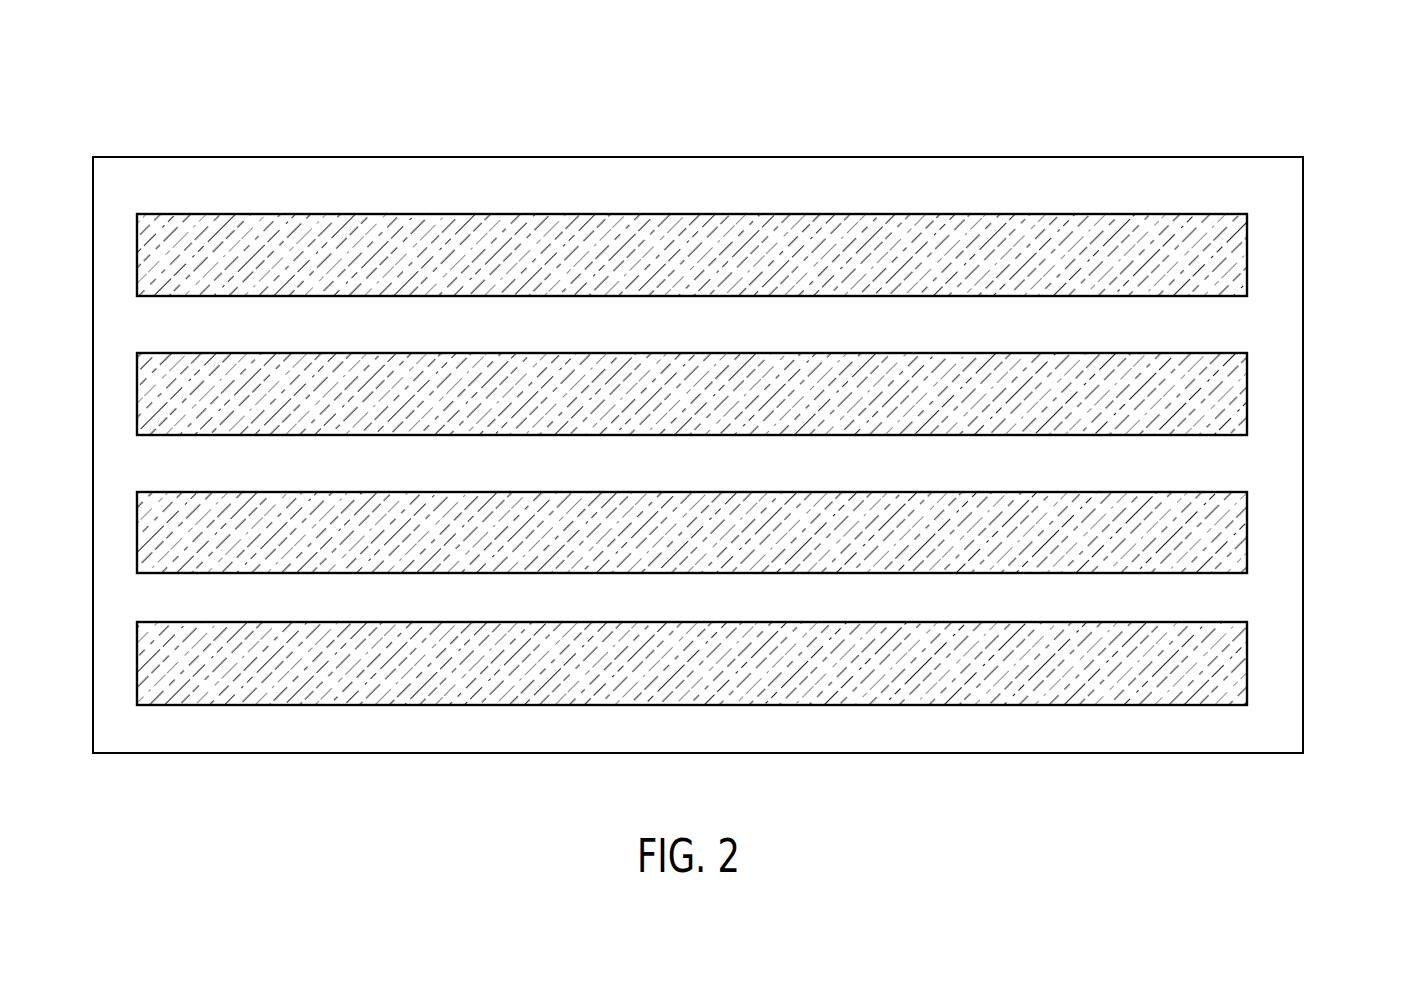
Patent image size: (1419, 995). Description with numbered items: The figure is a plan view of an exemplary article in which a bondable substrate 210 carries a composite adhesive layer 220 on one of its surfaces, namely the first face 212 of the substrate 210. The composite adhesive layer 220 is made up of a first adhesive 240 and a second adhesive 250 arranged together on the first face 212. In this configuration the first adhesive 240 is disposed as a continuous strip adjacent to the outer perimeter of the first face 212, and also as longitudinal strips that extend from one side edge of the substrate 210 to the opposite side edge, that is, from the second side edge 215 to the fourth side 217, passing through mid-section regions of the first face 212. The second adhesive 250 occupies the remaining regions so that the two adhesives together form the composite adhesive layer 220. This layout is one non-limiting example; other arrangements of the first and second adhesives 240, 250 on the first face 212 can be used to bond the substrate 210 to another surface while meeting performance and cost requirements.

The bondable substrate 210 is at (267, 117).
The first face 212 is at (728, 180).
The second side edge 215 is at (93, 511).
The fourth side 217 is at (1303, 602).
The composite adhesive layer 220 is at (693, 554).
The first adhesive 240 is at (1282, 458).
The second adhesive 250 is at (693, 274).